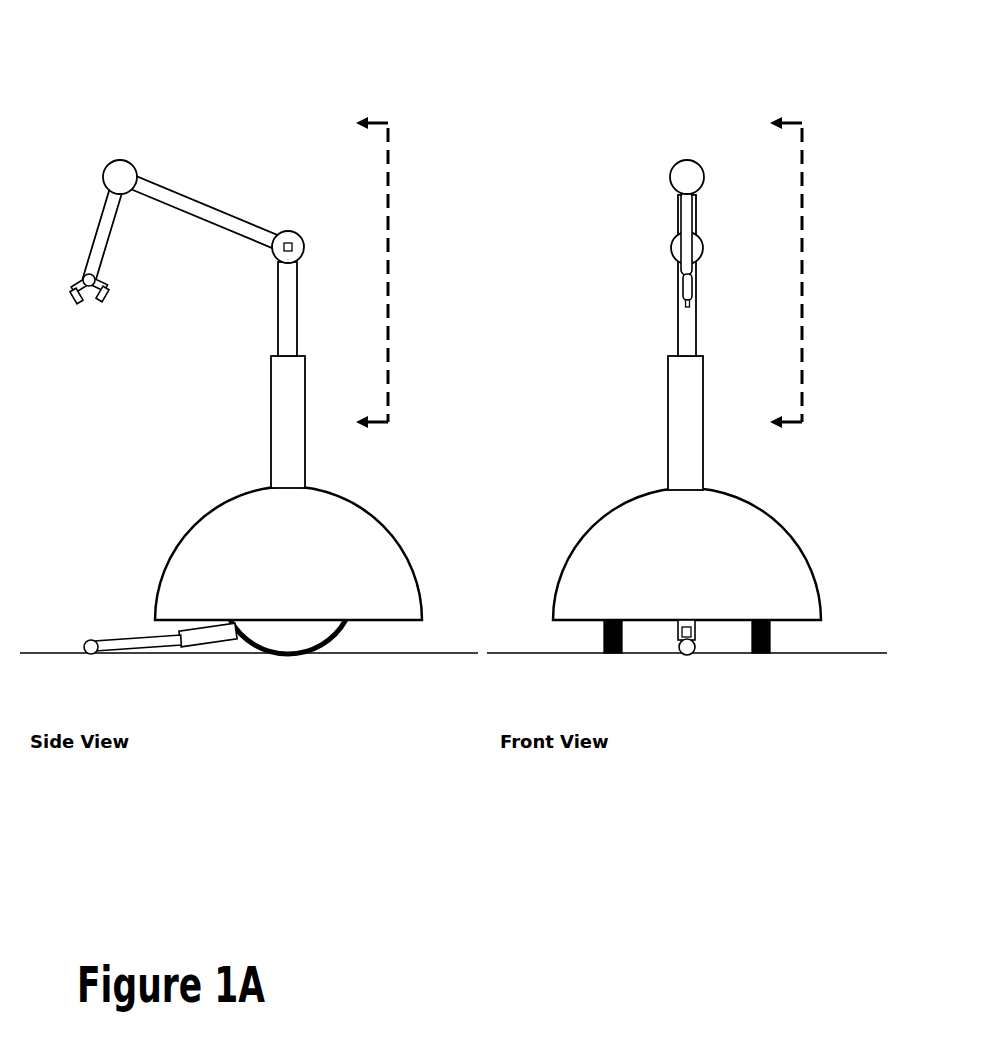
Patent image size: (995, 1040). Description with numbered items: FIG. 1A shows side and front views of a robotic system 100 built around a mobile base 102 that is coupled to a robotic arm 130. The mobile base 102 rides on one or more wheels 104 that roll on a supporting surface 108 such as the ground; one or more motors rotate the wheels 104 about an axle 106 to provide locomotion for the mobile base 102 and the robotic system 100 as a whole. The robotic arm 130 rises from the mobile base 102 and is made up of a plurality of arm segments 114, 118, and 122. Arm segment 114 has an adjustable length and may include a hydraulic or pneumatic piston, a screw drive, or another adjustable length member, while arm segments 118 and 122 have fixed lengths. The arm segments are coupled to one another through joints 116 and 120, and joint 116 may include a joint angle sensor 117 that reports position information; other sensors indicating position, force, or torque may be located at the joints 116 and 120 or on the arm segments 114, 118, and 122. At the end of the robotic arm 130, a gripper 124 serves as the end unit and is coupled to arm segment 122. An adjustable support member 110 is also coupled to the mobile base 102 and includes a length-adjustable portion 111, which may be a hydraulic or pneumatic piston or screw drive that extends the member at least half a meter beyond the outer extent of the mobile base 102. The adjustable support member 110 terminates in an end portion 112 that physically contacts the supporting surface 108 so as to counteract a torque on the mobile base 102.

The robotic system 100 is at (291, 86).
The mobile base 102 is at (355, 500).
The wheels 104 is at (340, 647).
The axle 106 is at (297, 595).
The supporting surface 108 is at (40, 655).
The adjustable support member 110 is at (188, 628).
The length-adjustable portion 111 is at (100, 640).
The end portion 112 is at (86, 641).
The arm segment 114 is at (305, 395).
The joint 116 is at (305, 247).
The joint angle sensor 117 is at (288, 231).
The arm segment 118 is at (215, 205).
The joint 120 is at (126, 161).
The arm segment 122 is at (100, 222).
The gripper 124 is at (100, 298).
The robotic arm 130 is at (388, 282).